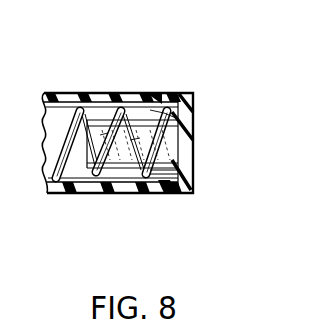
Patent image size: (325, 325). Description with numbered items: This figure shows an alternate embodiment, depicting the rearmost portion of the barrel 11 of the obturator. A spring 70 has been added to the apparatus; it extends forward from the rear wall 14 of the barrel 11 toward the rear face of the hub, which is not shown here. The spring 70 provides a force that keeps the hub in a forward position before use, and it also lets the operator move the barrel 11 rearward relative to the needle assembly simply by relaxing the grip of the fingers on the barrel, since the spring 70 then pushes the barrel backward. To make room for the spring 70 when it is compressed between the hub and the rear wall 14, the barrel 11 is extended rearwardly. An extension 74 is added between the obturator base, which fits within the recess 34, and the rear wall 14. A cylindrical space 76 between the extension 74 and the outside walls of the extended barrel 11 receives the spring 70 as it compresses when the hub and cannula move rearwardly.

The barrel 11 is at (132, 68).
The rear wall 14 is at (196, 110).
The recess 34 is at (95, 122).
The spring 70 is at (186, 144).
The extension 74 is at (152, 98).
The cylindrical space 76 is at (163, 182).